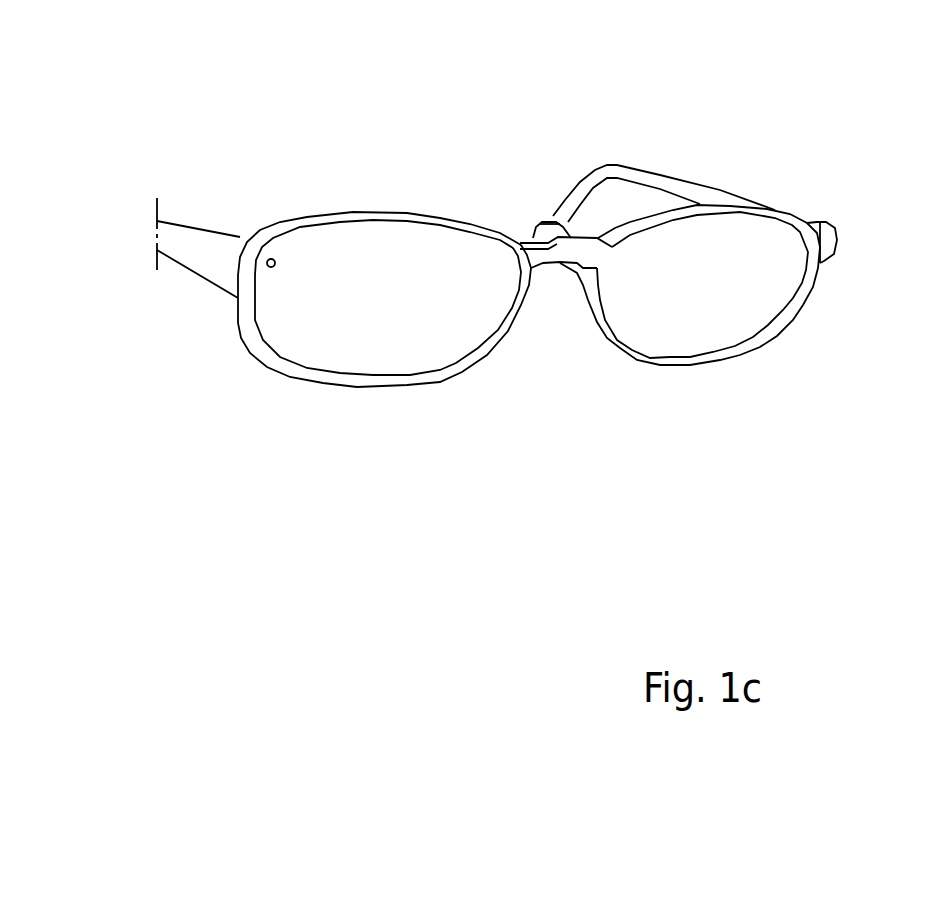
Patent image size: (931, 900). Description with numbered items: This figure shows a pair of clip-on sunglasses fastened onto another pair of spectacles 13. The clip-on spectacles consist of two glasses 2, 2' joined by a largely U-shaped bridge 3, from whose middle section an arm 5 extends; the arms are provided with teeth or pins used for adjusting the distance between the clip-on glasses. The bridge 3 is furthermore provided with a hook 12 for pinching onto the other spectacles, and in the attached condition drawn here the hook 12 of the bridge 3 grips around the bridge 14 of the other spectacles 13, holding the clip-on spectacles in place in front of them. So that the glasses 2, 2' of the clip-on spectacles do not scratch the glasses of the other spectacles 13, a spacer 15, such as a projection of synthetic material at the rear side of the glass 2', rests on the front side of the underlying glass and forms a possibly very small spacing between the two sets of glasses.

The glass of the clip-on spectacles 2 is at (698, 387).
The glass of the clip-on spectacles 2' is at (384, 390).
The bridge 3 is at (565, 250).
The arm 5 is at (600, 250).
The hook 12 is at (555, 236).
The other spectacles 13 is at (292, 218).
The bridge of the other spectacles 14 is at (532, 238).
The spacer 15 is at (266, 259).